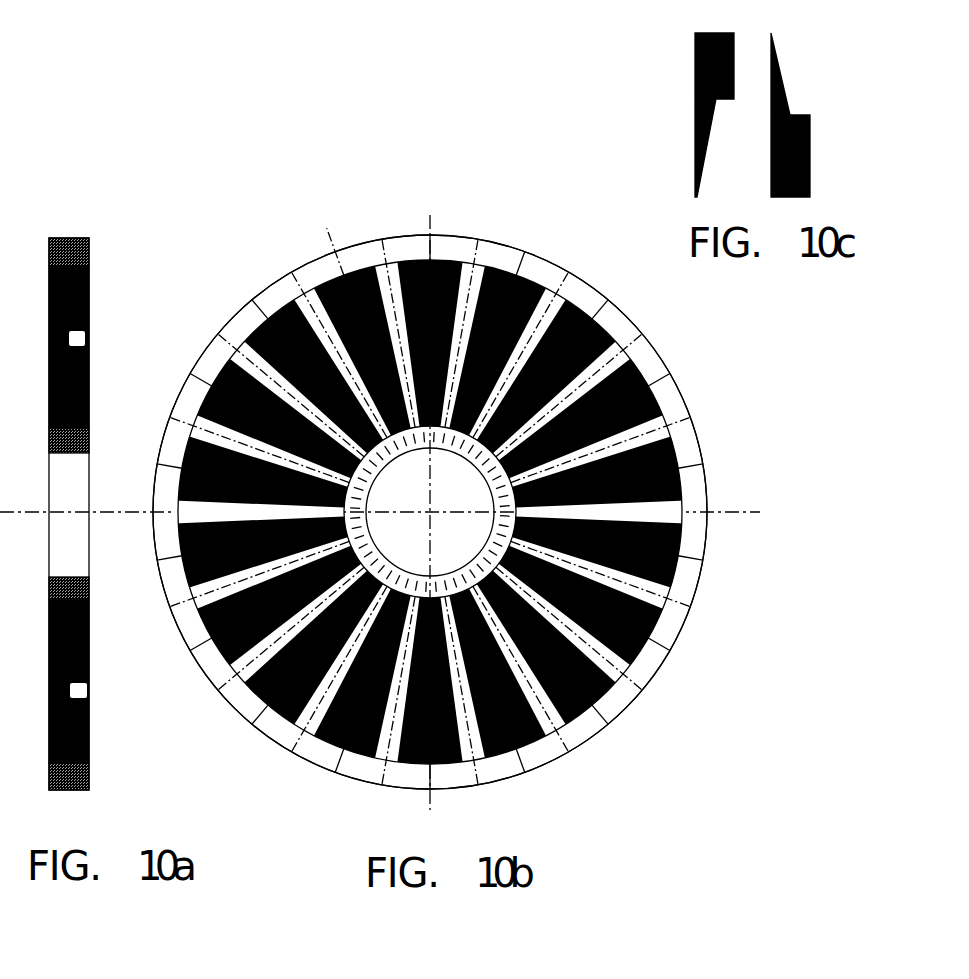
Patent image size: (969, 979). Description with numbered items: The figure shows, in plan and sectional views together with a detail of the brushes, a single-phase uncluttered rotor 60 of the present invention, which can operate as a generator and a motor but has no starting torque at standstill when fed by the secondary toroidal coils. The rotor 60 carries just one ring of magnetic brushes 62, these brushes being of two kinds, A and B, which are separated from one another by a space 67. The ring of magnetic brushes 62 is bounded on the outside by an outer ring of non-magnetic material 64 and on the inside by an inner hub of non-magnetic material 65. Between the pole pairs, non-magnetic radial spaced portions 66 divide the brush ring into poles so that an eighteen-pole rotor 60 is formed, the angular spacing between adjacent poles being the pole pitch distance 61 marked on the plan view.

In FIG. 10b, the rotor 60 is at (682, 370).
In FIG. 10b, the pole pitch distance 61 is at (430, 228).
In FIG. 10a, the magnetic brushes 62 is at (90, 303).
In FIG. 10b, the magnetic brushes 62 is at (582, 310).
In FIG. 10c, the magnetic brushes 62 is at (695, 135).
In FIG. 10a, the outer ring of non-magnetic material 64 is at (88, 257).
In FIG. 10b, the outer ring of non-magnetic material 64 is at (672, 625).
In FIG. 10a, the inner hub of non-magnetic material 65 is at (88, 445).
In FIG. 10b, the inner hub of non-magnetic material 65 is at (683, 553).
In FIG. 10b, the non-magnetic radial spaced portions 66 is at (590, 730).
In FIG. 10a, the space 67 is at (85, 340).
In FIG. 10b, the space 67 is at (678, 450).